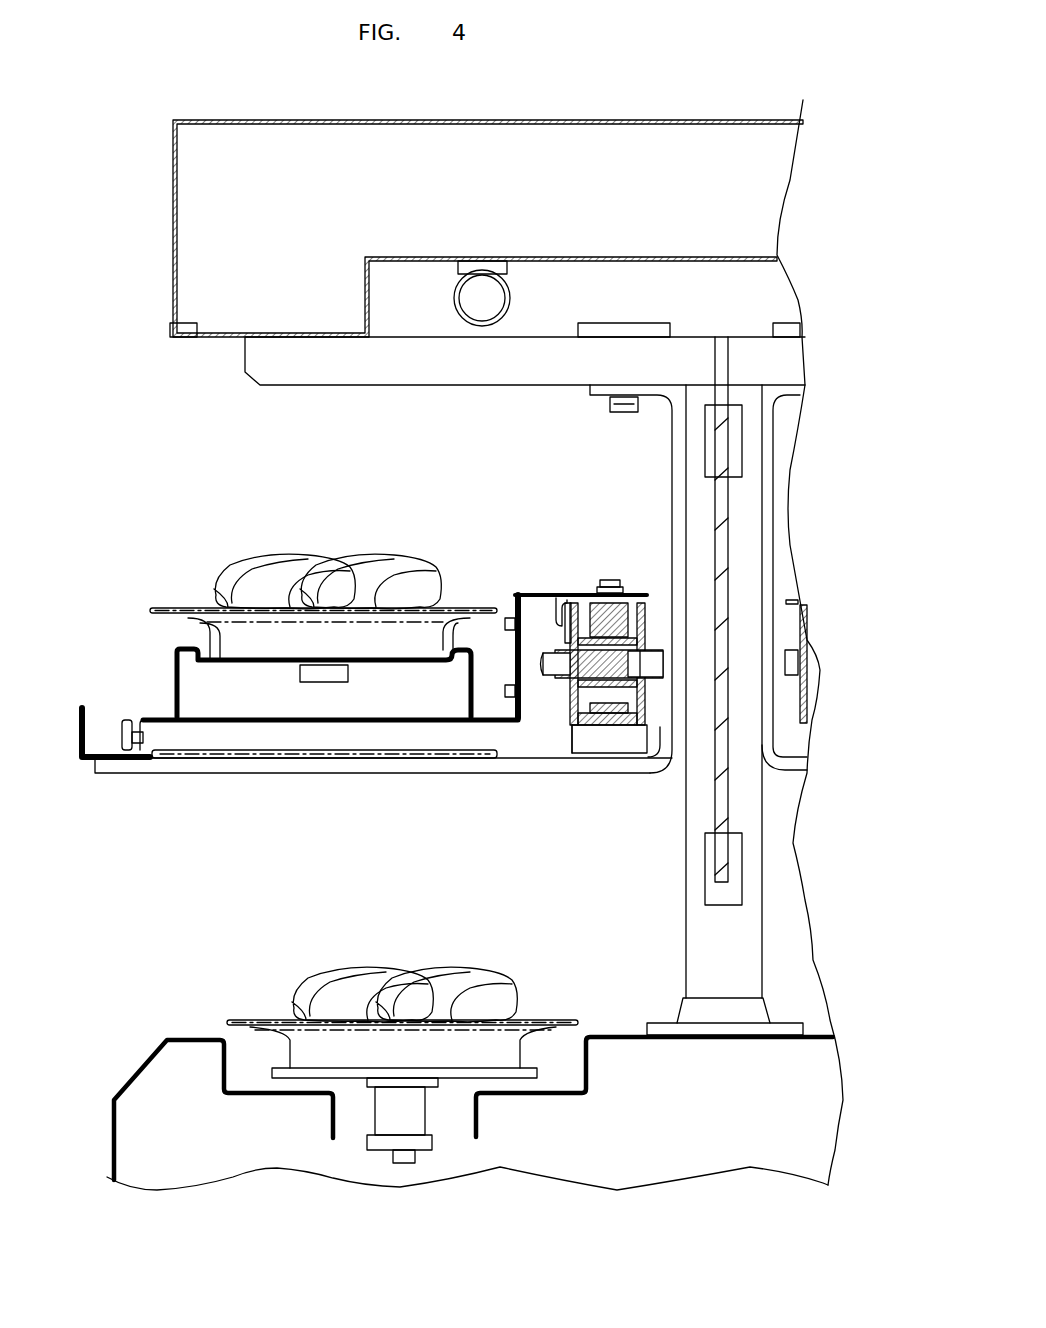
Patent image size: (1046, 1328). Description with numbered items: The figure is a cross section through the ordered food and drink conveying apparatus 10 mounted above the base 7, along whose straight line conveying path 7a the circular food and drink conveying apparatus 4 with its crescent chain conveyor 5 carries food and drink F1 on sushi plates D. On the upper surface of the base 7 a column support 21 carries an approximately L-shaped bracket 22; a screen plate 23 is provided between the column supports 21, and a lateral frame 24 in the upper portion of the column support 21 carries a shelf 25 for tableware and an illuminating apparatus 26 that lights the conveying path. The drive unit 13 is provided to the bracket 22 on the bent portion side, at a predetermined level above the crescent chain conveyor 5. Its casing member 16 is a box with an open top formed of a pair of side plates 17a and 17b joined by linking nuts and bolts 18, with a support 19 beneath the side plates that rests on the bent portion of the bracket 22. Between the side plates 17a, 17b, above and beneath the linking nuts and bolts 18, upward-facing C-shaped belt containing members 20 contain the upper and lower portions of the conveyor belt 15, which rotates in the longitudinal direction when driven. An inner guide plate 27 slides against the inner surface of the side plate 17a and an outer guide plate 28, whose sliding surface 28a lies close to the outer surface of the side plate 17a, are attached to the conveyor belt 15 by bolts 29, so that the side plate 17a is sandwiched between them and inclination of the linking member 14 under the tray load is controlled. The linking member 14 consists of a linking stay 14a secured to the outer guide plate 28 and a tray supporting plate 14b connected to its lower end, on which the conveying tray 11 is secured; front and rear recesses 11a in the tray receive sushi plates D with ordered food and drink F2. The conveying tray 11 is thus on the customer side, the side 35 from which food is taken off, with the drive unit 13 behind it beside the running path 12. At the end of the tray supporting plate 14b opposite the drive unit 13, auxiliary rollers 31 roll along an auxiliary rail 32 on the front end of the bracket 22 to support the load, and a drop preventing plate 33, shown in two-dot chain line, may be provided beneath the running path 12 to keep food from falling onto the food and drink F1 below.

The circular food and drink conveying apparatus 4 is at (522, 960).
The crescent chain conveyor 5 is at (357, 1113).
The base 7 is at (185, 1035).
The straight line conveying path 7a is at (190, 958).
The ordered food and drink conveying apparatus 10 is at (232, 510).
The conveying tray 11 is at (170, 660).
The recess 11a is at (218, 623).
The running path 12 is at (293, 732).
The drive unit 13 is at (590, 590).
The linking member 14 is at (334, 729).
The linking stay 14a is at (490, 657).
The tray supporting plate 14b is at (427, 724).
The conveyor belt 15 is at (615, 600).
The casing member 16 is at (556, 736).
The side plate 17a is at (572, 680).
The side plate 17b is at (645, 695).
The linking nuts and bolts 18 is at (660, 668).
The support 19 is at (636, 750).
The belt containing member 20 is at (645, 625).
The column support 21 is at (750, 497).
The bracket 22 is at (360, 772).
The screen plate 23 is at (720, 548).
The lateral frame 24 is at (525, 372).
The shelf 25 is at (175, 240).
The illuminating apparatus 26 is at (500, 296).
The inner guide plate 27 is at (566, 625).
The outer guide plate 28 is at (550, 598).
The sliding surface 28a is at (565, 605).
The bolt 29 is at (608, 584).
The auxiliary roller 31 is at (125, 722).
The auxiliary rail 32 is at (78, 718).
The drop preventing plate 33 is at (270, 750).
The side from which ordered food and drink are taken off 35 is at (93, 495).
The sushi plate D is at (458, 608).
The food and drink F1 is at (378, 964).
The ordered food and drink F2 is at (376, 556).